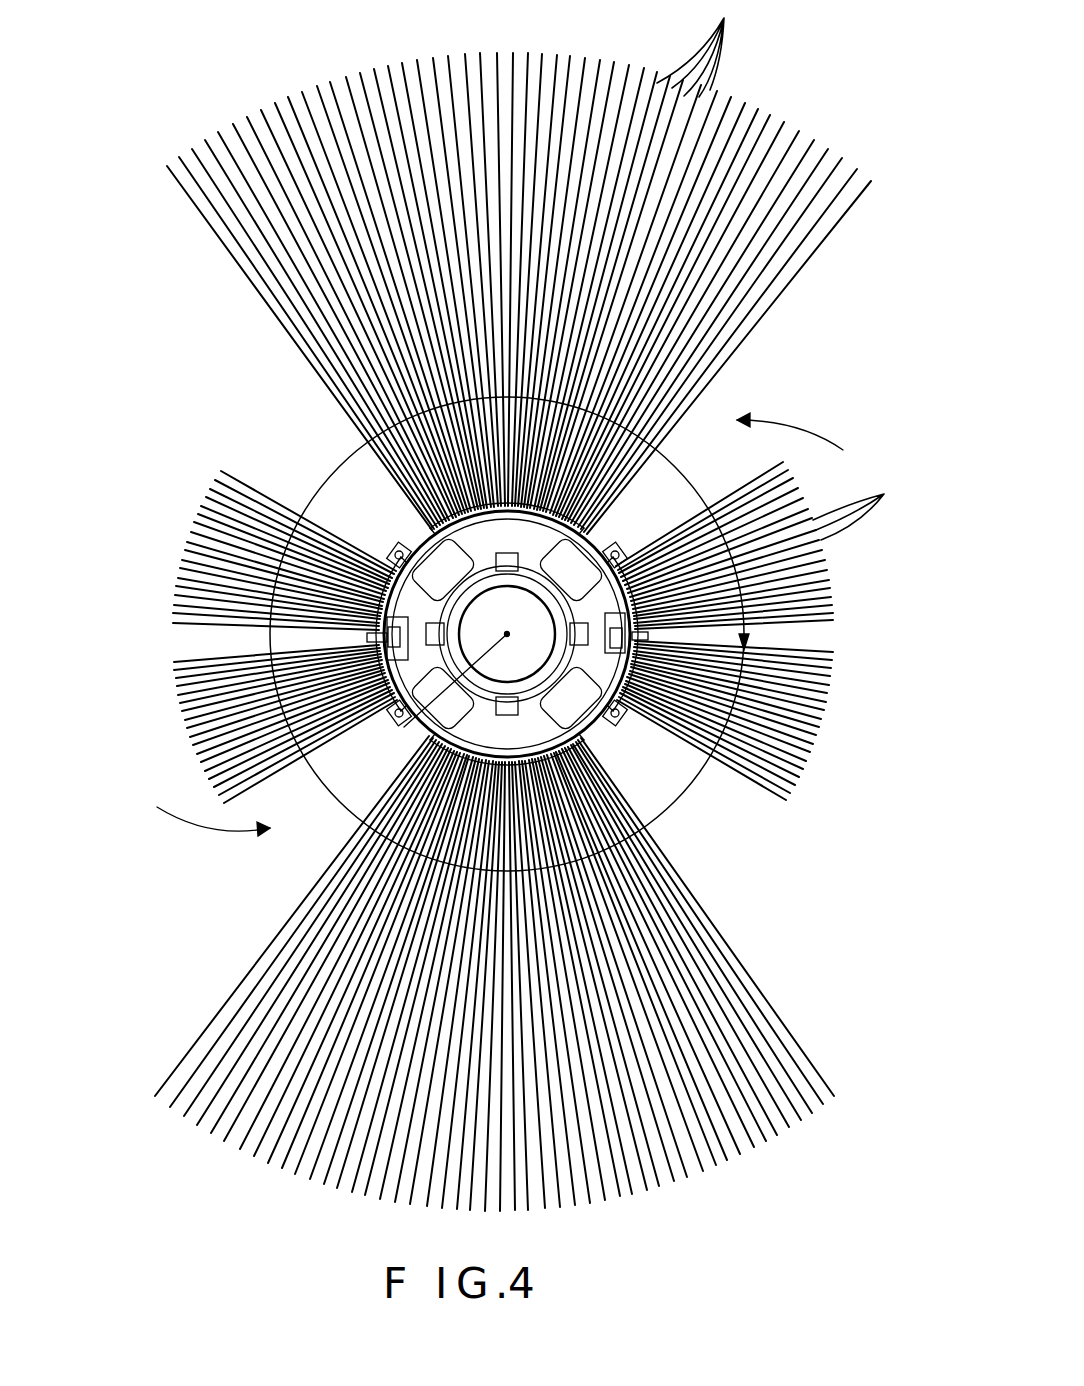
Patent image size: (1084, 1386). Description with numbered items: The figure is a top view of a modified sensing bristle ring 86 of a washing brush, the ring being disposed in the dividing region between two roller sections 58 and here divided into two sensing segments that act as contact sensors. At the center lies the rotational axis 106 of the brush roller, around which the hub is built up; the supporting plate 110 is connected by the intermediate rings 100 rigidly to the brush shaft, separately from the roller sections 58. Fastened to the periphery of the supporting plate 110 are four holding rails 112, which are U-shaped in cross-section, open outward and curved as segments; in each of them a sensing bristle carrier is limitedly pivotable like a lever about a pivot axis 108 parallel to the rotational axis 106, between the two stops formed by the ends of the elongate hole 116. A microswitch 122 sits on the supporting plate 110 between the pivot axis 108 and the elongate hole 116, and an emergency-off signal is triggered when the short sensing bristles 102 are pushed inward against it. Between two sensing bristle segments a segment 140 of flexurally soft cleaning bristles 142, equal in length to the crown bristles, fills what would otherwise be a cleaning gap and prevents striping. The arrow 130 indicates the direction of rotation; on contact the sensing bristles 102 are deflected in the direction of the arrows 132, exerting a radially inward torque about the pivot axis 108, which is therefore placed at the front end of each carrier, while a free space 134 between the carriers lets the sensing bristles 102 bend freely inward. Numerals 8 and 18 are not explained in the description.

The rotary brush 8 is at (771, 633).
The bristle section 18 is at (458, 636).
The roller section 58 is at (503, 634).
The sensing bristle ring 86 is at (818, 752).
The intermediate ring 100 is at (527, 597).
The sensing bristle 102 is at (771, 545).
The rotational axis 106 is at (404, 727).
The pivot axis 108 is at (370, 543).
The supporting plate 110 is at (615, 723).
The holding rail 112 is at (400, 497).
The elongate hole 116 is at (340, 797).
The microswitch 122 is at (655, 520).
The arrow indicating direction of rotation 130 is at (675, 466).
The arrows indicating deflection direction 132 is at (817, 433).
The free space 134 is at (247, 477).
The segment of cleaning bristles 140 is at (782, 133).
The cleaning bristle 142 is at (717, 51).